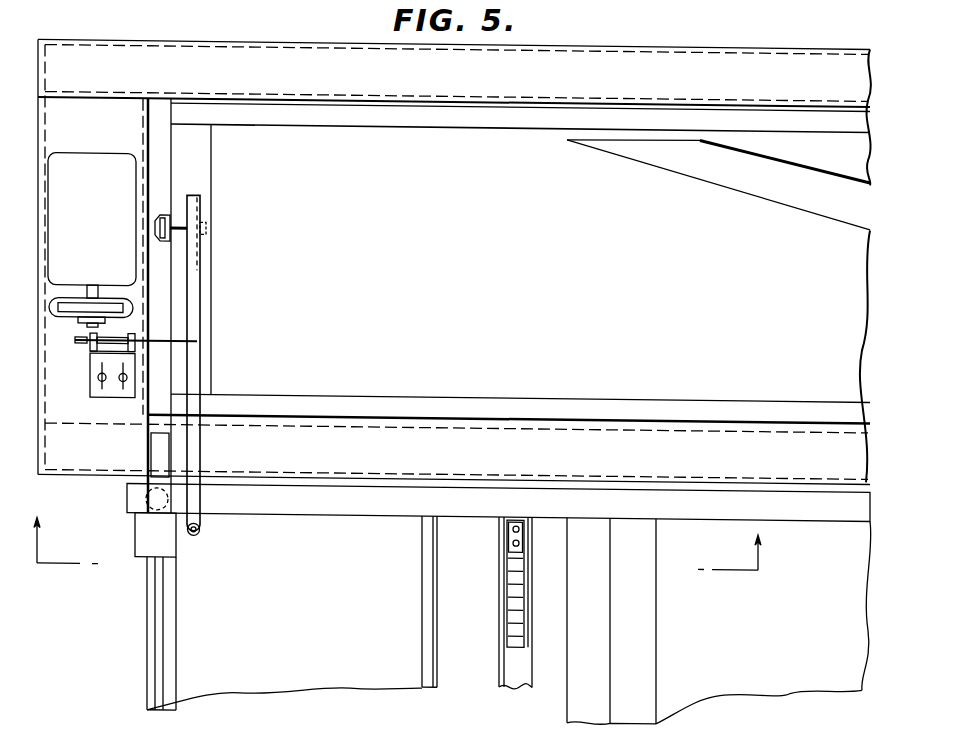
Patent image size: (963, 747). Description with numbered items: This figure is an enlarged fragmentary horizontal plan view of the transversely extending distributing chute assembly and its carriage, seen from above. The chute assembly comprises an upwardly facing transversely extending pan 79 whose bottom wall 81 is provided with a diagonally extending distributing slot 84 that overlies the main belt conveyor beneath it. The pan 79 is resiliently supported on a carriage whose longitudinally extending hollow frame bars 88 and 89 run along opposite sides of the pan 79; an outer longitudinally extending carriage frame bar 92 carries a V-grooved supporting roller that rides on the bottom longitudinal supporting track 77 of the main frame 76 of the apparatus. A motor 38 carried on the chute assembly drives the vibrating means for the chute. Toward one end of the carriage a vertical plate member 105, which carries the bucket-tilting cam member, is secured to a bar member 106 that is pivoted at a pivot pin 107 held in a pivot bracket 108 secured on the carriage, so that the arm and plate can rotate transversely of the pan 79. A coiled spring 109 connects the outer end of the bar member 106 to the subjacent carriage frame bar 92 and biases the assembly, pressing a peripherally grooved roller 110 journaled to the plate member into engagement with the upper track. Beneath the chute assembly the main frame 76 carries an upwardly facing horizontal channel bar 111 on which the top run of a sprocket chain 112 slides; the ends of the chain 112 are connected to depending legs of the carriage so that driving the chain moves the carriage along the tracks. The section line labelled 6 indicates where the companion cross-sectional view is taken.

The motor 38 is at (73, 162).
The main frame 76 is at (393, 685).
The bottom longitudinal supporting track 77 is at (150, 686).
The pan 79 is at (487, 414).
The bottom wall 81 is at (553, 289).
The distributing slot 84 is at (777, 187).
The hollow frame bar 88 is at (708, 53).
The hollow frame bar 89 is at (727, 470).
The outer carriage frame bar 92 is at (808, 505).
The vertical plate member 105 is at (205, 268).
The bar member 106 is at (195, 450).
The pivot pin 107 is at (157, 335).
The pivot bracket 108 is at (90, 357).
The coiled spring 109 is at (198, 533).
The peripherally grooved roller 110 is at (156, 215).
The horizontal channel bar 111 is at (531, 678).
The sprocket chain 112 is at (507, 630).
The section line 6- 6 is at (405, 560).